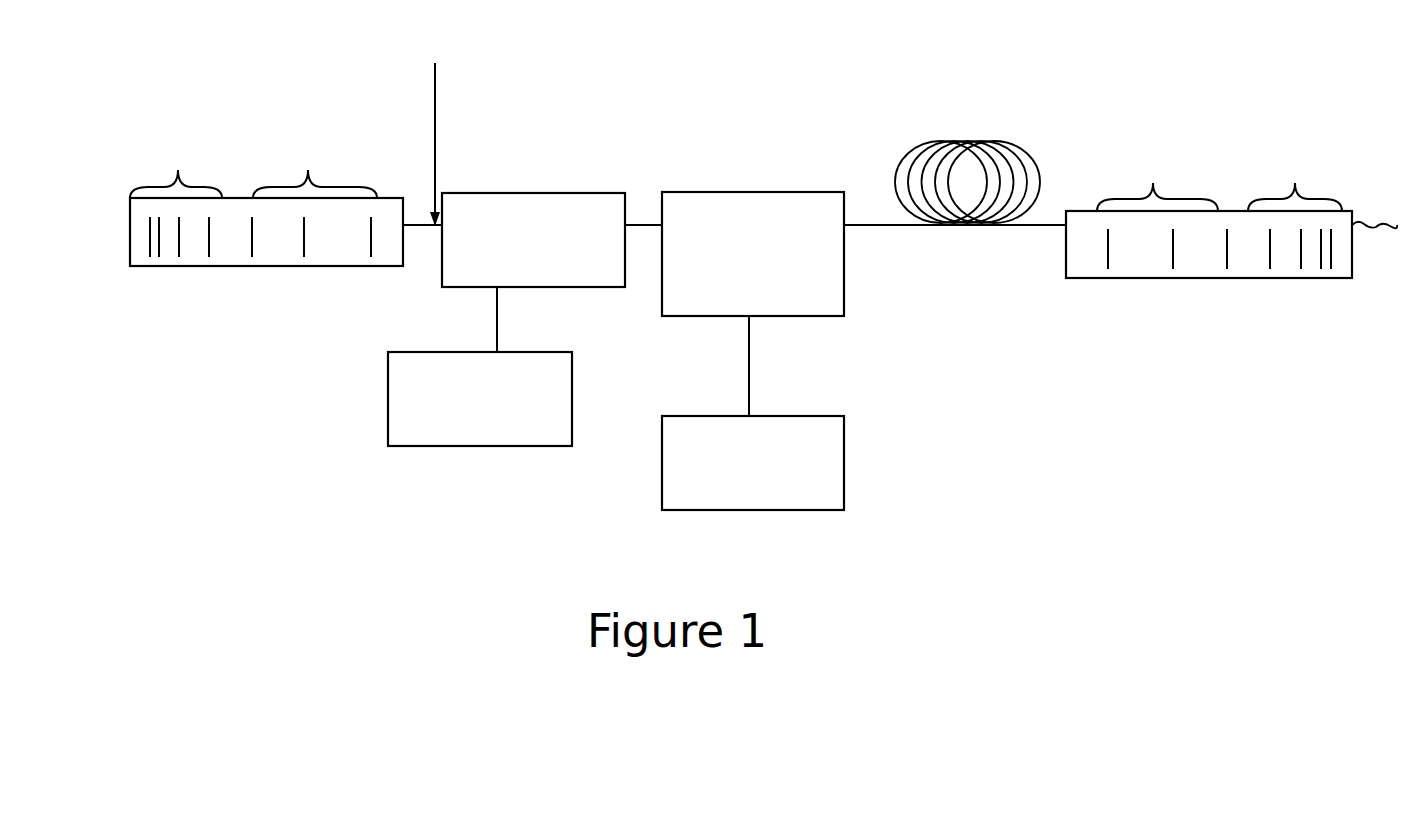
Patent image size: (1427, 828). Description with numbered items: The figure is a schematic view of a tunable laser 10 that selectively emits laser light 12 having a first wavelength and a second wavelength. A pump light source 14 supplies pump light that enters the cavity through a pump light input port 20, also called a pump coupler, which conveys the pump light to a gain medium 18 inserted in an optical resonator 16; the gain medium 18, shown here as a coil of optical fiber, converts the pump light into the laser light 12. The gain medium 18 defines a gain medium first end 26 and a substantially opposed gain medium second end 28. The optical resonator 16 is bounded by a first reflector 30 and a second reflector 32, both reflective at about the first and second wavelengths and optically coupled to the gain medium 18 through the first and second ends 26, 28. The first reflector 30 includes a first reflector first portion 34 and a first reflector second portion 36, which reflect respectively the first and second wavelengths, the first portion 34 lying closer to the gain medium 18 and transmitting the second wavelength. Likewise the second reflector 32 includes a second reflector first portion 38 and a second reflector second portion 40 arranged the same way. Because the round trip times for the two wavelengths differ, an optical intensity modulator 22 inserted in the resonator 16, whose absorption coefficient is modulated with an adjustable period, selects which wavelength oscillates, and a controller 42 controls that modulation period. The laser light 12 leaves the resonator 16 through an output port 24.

The tunable laser 10 is at (267, 457).
The laser light 12 is at (1382, 228).
The pump light source 14 is at (739, 500).
The optical resonator 16 is at (410, 128).
The gain medium 18 is at (918, 180).
The pump light input port 20 is at (739, 305).
The optical intensity modulator 22 is at (519, 278).
The output port 24 is at (1350, 223).
The gain medium first end 26 is at (877, 225).
The gain medium second end 28 is at (1035, 225).
The first reflector 30 is at (266, 268).
The second reflector 32 is at (1209, 282).
The first reflector first portion 34 is at (314, 192).
The first reflector second portion 36 is at (176, 192).
The second reflector first portion 38 is at (1162, 205).
The second reflector second portion 40 is at (1295, 210).
The controller 42 is at (466, 437).